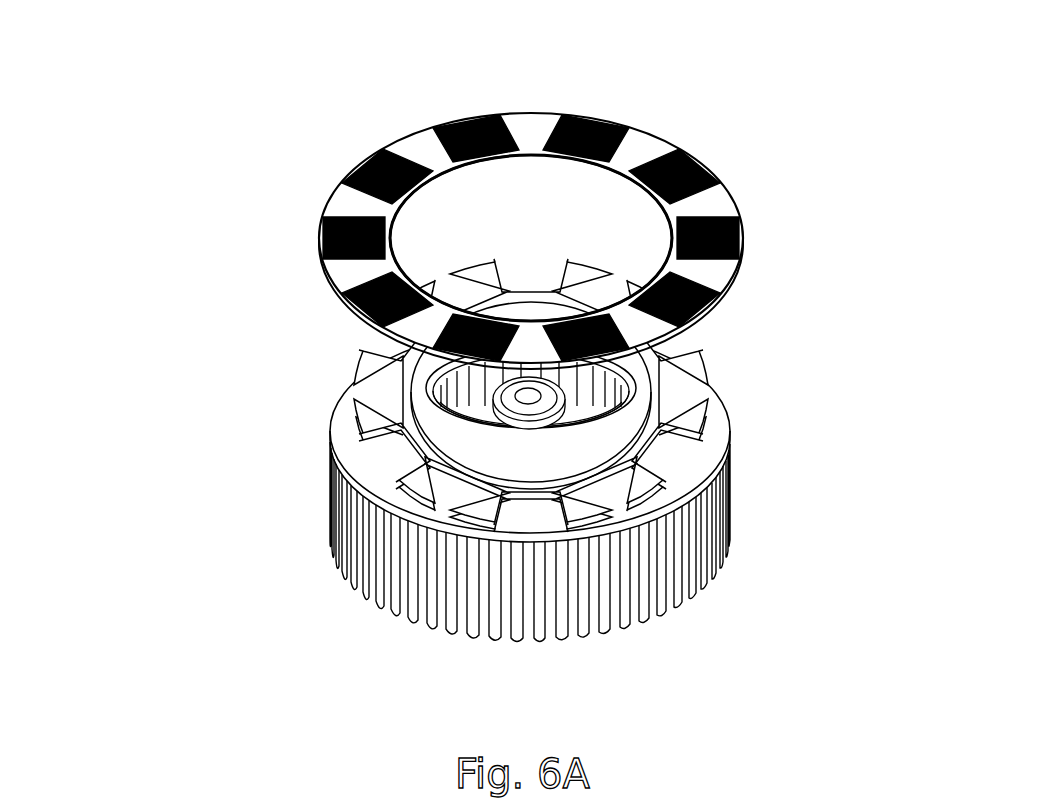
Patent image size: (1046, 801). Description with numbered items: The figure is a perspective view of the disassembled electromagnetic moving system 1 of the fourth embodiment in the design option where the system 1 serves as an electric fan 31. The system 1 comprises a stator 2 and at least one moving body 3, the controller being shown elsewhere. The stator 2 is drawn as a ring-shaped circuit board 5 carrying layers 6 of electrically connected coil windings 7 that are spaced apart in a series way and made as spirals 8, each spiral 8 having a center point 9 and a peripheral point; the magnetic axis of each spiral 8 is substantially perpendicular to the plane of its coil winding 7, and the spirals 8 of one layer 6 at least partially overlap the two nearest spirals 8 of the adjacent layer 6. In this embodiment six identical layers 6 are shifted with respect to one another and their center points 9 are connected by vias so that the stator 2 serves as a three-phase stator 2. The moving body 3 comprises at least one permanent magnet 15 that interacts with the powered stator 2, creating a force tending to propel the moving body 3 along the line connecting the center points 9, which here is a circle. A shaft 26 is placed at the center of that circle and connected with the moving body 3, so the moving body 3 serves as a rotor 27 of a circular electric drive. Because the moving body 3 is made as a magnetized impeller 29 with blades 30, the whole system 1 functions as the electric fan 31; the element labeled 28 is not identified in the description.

The electromagnetic moving system 1 is at (188, 183).
The electric fan 31 is at (502, 357).
The stator 2 is at (783, 172).
The moving body 3 is at (270, 432).
The rotor 27 is at (570, 472).
The circuit board 5 is at (643, 153).
The layer 6 is at (722, 236).
The coil winding 7 is at (355, 308).
The spiral 8 is at (385, 167).
The center point 9 is at (330, 202).
The permanent magnet 15 is at (673, 402).
The shaft 26 is at (530, 398).
The ring lower edge 28 is at (750, 330).
The magnetized impeller 29 is at (650, 482).
The blades 30 is at (435, 576).